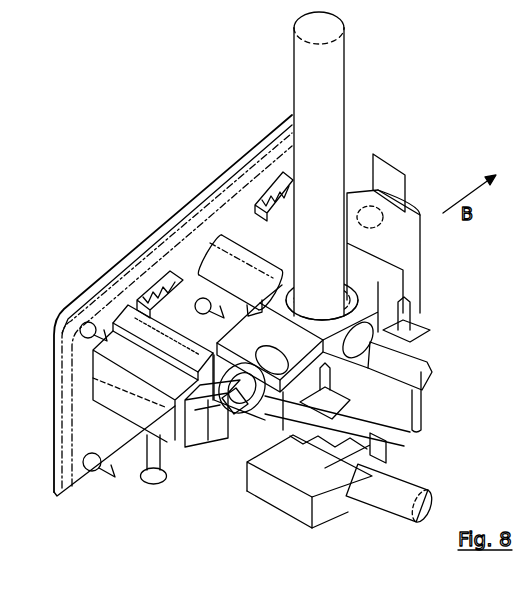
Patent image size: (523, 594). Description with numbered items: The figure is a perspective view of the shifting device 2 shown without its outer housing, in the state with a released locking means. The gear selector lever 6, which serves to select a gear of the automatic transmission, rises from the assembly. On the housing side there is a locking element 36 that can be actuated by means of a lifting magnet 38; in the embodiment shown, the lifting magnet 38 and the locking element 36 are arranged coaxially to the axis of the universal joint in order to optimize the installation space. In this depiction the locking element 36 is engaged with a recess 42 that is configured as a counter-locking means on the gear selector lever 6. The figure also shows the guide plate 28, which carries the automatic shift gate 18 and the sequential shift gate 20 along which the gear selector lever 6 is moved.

The shifting device 2 is at (90, 134).
The gear selector lever 6 is at (310, 90).
The automatic shift gate 18 is at (265, 503).
The sequential shift gate 20 is at (248, 483).
The guide plate 28 is at (300, 515).
The locking element 36 is at (380, 465).
The lifting magnet 38 is at (395, 490).
The recess 42 is at (410, 410).